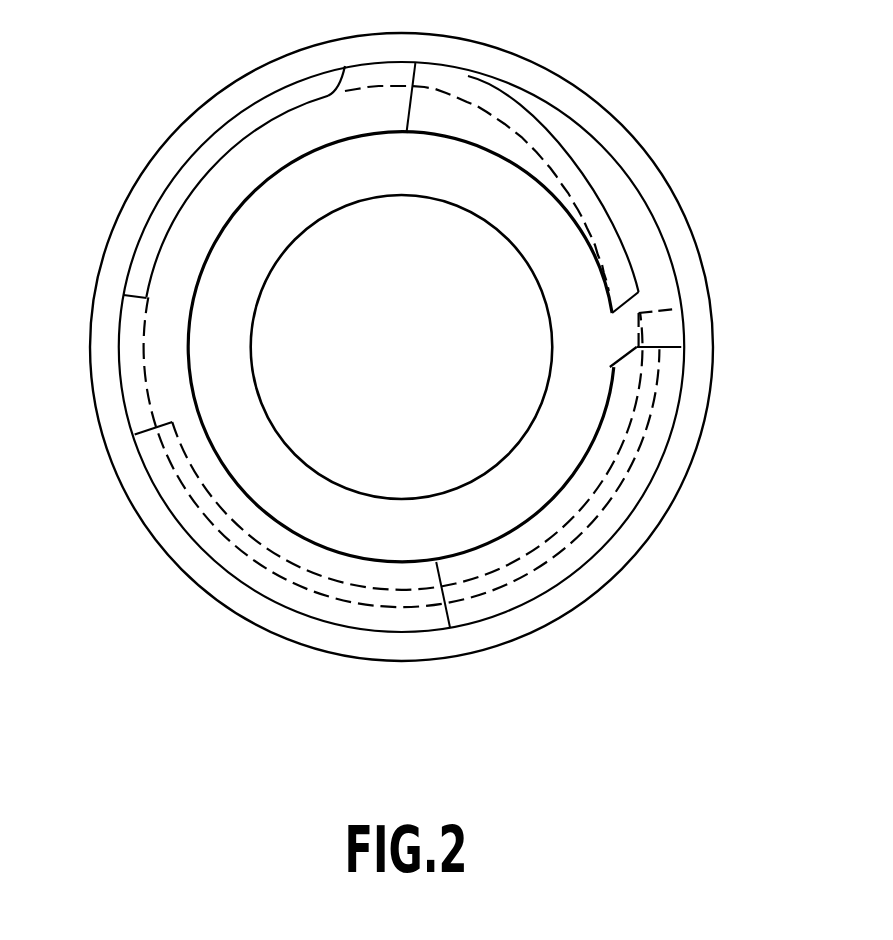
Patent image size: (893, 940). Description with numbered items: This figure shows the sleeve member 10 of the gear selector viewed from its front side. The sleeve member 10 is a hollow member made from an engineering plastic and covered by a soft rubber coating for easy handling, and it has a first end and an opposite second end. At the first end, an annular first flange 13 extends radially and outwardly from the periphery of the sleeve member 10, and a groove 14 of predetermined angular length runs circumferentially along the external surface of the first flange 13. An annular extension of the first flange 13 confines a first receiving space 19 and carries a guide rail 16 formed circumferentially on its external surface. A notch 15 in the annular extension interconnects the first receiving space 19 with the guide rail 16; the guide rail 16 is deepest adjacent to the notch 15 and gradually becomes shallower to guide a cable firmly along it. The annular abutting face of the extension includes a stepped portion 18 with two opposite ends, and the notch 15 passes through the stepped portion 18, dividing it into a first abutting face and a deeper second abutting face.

The sleeve member 10 is at (655, 156).
The first flange 13 is at (547, 631).
The groove 14 is at (227, 548).
The notch 15 is at (637, 308).
The guide rail 16 is at (525, 145).
The stepped portion 18 is at (622, 263).
The first receiving space 19 is at (120, 365).